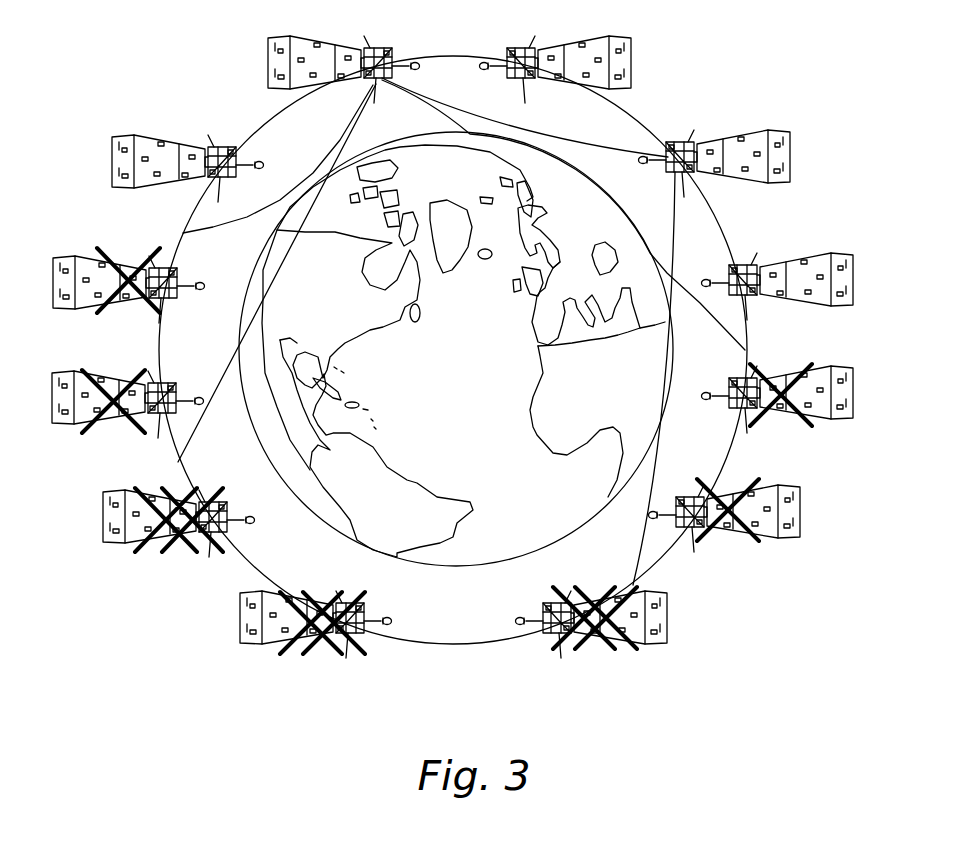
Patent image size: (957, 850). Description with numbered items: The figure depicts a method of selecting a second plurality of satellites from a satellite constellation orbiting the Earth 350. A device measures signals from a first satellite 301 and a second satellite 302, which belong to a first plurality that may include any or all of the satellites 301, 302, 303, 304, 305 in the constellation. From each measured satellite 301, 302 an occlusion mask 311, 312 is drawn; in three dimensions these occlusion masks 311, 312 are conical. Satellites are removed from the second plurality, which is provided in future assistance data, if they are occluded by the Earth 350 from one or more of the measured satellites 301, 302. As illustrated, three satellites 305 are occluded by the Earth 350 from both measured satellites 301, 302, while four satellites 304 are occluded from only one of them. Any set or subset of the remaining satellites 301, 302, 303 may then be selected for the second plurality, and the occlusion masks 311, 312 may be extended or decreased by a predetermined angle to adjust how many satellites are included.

The first satellite 301 is at (344, 56).
The second satellite 302 is at (715, 149).
The satellites 303 is at (501, 165).
The satellites 304 is at (452, 400).
The satellites 305 is at (365, 582).
The occlusion mask 311 is at (727, 328).
The occlusion mask 312 is at (217, 216).
The Earth 350 is at (427, 167).